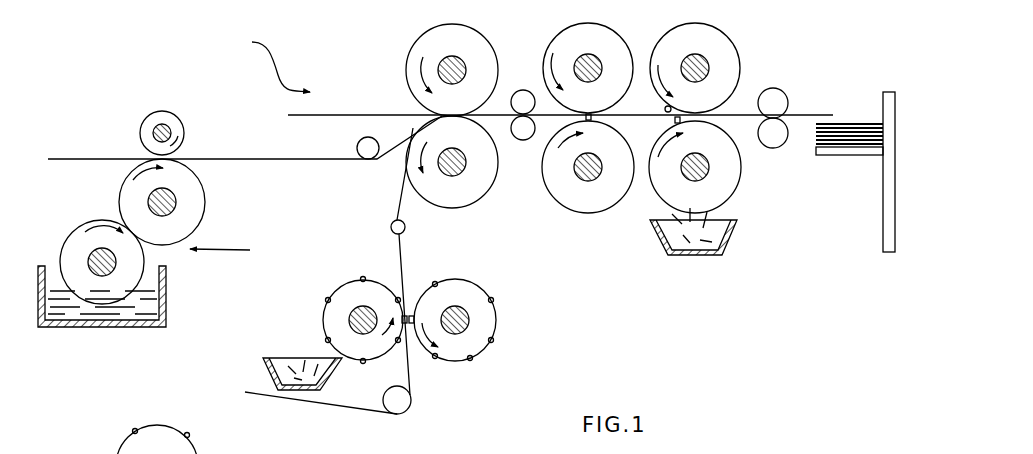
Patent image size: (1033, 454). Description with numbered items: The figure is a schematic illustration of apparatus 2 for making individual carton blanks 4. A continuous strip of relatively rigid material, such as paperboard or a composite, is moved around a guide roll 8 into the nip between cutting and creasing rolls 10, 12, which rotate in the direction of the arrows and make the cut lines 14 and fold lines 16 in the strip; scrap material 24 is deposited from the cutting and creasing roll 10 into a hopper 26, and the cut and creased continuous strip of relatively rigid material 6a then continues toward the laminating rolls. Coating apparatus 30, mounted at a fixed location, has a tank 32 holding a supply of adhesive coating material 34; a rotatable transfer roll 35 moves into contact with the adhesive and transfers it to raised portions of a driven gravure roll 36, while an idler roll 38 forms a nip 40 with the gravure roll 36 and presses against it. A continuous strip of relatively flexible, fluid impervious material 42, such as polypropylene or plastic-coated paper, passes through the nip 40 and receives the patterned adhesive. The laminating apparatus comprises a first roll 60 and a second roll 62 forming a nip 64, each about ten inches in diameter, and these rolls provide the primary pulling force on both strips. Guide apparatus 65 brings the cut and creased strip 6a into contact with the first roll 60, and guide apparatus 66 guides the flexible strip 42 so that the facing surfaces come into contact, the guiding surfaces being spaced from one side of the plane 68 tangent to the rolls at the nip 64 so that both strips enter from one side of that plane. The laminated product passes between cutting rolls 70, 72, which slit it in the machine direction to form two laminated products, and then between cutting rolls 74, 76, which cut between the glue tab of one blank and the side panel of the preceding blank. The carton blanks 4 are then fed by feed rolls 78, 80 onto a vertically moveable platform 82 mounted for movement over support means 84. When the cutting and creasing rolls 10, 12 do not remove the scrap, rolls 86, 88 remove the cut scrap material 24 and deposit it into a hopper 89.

The apparatus 2 is at (273, 64).
The carton blanks 4 is at (860, 123).
The cut and creased continuous strip of a relatively rigid material 6a is at (399, 246).
The guide roll 8 is at (387, 393).
The cutting and creasing roll 10 is at (348, 289).
The cutting and creasing roll 12 is at (487, 315).
The cut lines 14 is at (192, 452).
The fold lines 16 is at (321, 408).
The scrap material 24 is at (298, 352).
The hopper 26 is at (263, 362).
The coating apparatus 30 is at (232, 251).
The tank 32 is at (95, 328).
The adhesive coating material 34 is at (137, 307).
The transfer roll 35 is at (82, 226).
The gravure roll 36 is at (203, 202).
The idler roll 38 is at (185, 127).
The nip 40 is at (147, 157).
The continuous strip of a relatively flexible, fluid impervious material 42 is at (97, 158).
The first roll 60 is at (480, 188).
The second roll 62 is at (467, 40).
The nip 64 is at (428, 111).
The guide apparatus 65 is at (392, 225).
The guide apparatus 66 is at (363, 138).
The plane 68 is at (330, 113).
The cutting roll 70 is at (525, 138).
The cutting roll 72 is at (521, 92).
The cutting roll 74 is at (590, 203).
The cutting roll 76 is at (597, 32).
The feed roll 78 is at (775, 147).
The feed roll 80 is at (782, 90).
The vertically moveable platform 82 is at (862, 156).
The support means 84 is at (882, 230).
The roll 86 is at (733, 45).
The roll 88 is at (722, 198).
The hopper 89 is at (729, 242).